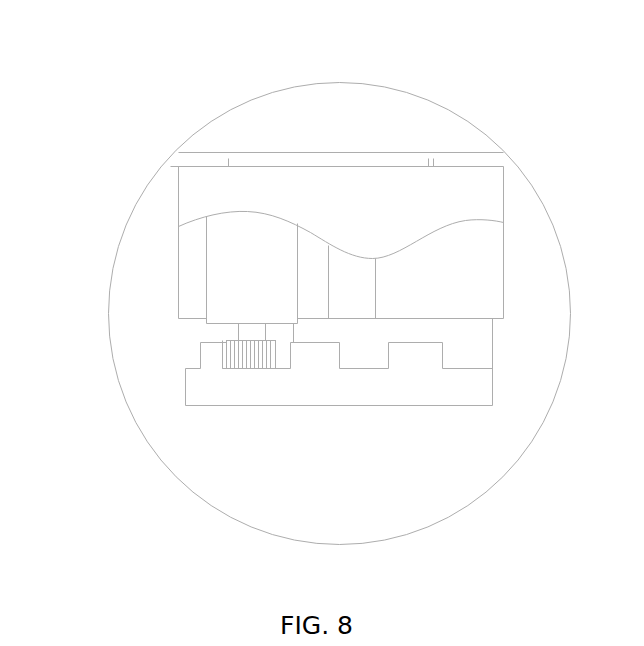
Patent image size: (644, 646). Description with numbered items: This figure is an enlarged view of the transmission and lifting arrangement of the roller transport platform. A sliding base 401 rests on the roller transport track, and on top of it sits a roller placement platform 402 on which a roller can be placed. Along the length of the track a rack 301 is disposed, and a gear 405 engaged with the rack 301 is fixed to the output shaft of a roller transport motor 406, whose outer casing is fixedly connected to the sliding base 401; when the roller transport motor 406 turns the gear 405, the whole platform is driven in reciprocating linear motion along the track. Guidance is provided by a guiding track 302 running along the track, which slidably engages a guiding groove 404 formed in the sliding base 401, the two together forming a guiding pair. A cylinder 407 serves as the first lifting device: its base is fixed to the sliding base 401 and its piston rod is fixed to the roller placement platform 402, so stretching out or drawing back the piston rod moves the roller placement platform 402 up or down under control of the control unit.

The rack 301 is at (119, 406).
The guiding track 302 is at (362, 443).
The sliding base 401 is at (342, 159).
The roller placement platform 402 is at (389, 83).
The guiding groove 404 is at (505, 455).
The gear 405 is at (183, 454).
The roller transport motor 406 is at (220, 295).
The cylinder 407 is at (295, 159).